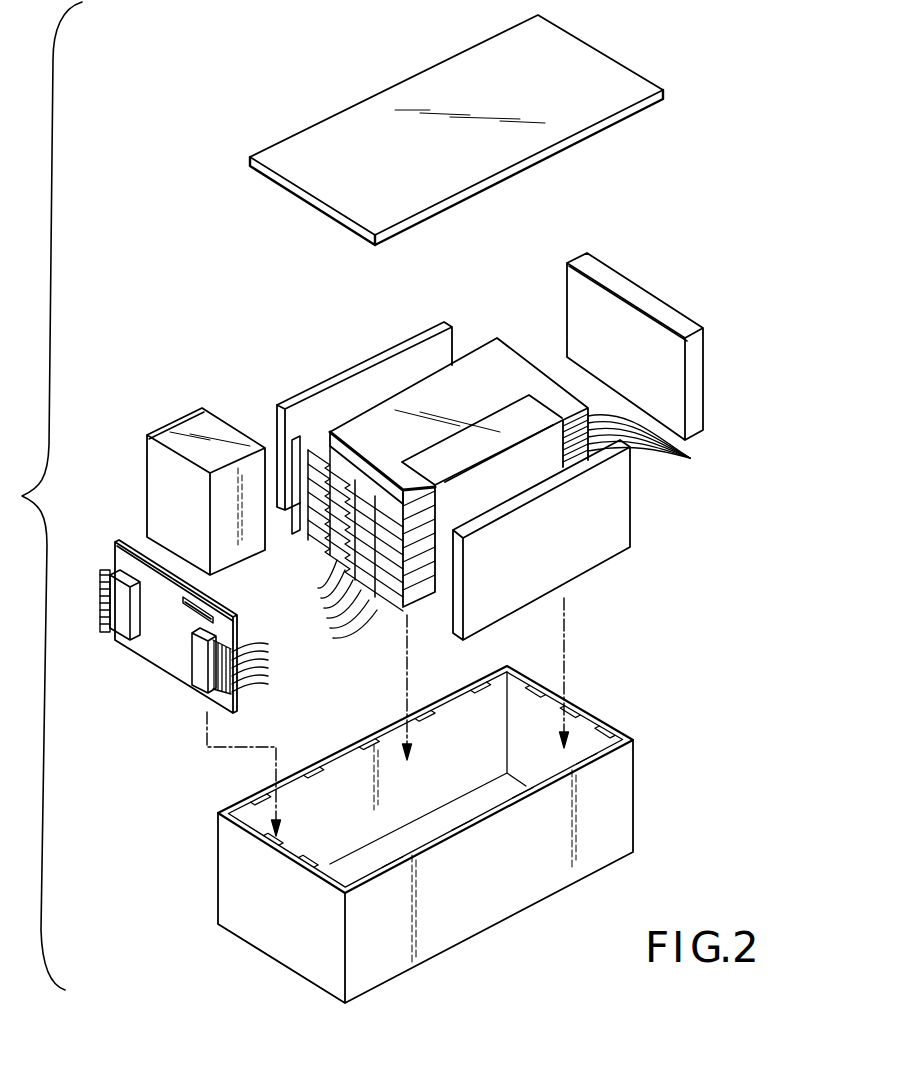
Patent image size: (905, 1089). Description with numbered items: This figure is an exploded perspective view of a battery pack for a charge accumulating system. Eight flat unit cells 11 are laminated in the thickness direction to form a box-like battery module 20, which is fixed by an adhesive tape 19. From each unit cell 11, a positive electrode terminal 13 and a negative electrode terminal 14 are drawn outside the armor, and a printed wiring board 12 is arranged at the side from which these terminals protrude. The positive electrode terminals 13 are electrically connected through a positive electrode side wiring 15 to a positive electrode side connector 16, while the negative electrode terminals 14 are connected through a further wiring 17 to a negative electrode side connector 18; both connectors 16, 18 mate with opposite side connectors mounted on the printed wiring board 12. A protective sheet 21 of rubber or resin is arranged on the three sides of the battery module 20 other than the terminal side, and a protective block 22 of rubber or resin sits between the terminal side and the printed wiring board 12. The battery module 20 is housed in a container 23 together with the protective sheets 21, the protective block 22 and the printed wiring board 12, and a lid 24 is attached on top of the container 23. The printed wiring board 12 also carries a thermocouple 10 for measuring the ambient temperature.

The thermocouple 10 is at (188, 613).
The flat unit cell 11 is at (690, 458).
The printed wiring board 12 is at (145, 660).
The positive electrode terminal 13 is at (327, 557).
The negative electrode terminal 14 is at (318, 437).
The positive electrode side wiring 15 is at (320, 587).
The positive electrode side connector 16 is at (197, 683).
The positive electrode side wiring 17 is at (95, 567).
The negative electrode side connector 18 is at (113, 623).
The adhesive tape 19 is at (520, 408).
The battery module 20 is at (403, 383).
The protective sheet 21 is at (340, 375).
The protective block 22 is at (190, 420).
The container 23 is at (622, 807).
The lid 24 is at (598, 60).